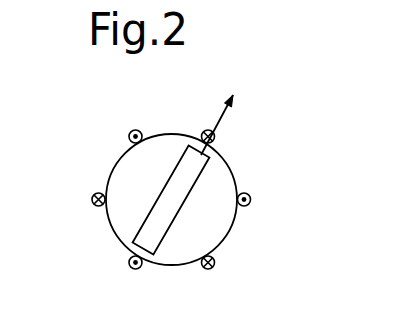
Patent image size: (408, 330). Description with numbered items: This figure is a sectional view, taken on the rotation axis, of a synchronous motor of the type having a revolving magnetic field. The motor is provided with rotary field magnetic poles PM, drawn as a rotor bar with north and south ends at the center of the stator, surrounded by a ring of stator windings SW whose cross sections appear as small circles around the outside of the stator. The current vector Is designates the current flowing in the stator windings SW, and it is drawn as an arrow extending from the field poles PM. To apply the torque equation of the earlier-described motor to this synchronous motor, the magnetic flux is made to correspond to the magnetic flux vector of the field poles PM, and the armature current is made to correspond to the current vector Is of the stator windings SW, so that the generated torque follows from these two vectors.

The rotary field magnetic poles PM is at (160, 200).
The stator windings SW is at (214, 262).
The current vector Is is at (209, 124).